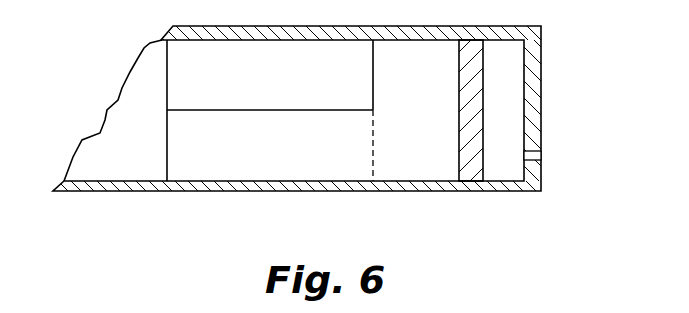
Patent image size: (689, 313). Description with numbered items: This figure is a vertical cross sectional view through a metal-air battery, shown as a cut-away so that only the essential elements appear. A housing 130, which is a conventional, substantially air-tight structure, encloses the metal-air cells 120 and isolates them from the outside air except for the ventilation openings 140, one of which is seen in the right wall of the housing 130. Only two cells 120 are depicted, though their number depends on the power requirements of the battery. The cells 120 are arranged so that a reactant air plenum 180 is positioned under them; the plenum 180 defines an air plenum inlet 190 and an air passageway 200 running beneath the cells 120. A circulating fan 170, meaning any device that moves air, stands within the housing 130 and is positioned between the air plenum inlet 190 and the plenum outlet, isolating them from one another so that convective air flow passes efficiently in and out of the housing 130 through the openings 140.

The metal-air cell 120 is at (284, 86).
The housing 130 is at (361, 194).
The ventilation opening 140 is at (542, 154).
The circulating fan 170 is at (458, 78).
The reactant air plenum 180 is at (109, 162).
The air plenum inlet 190 is at (377, 142).
The air passageway 200 is at (282, 152).